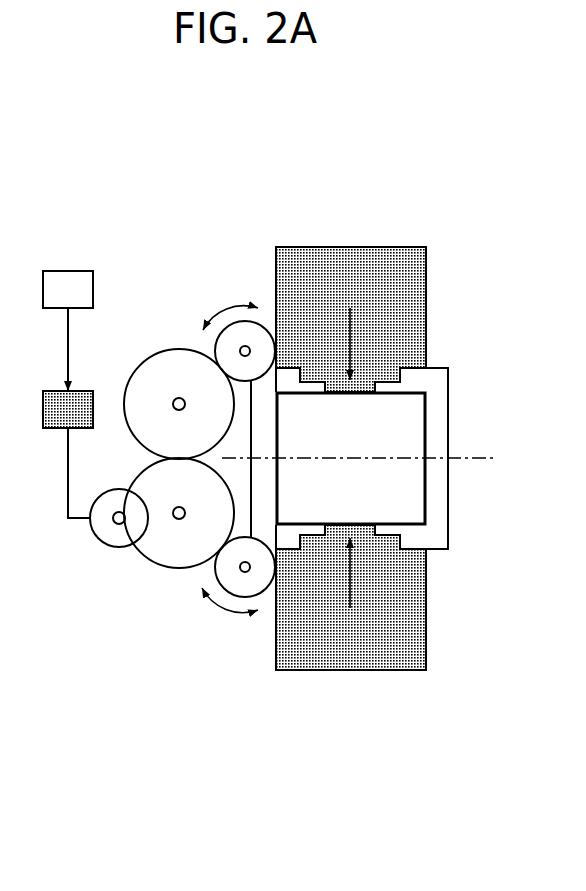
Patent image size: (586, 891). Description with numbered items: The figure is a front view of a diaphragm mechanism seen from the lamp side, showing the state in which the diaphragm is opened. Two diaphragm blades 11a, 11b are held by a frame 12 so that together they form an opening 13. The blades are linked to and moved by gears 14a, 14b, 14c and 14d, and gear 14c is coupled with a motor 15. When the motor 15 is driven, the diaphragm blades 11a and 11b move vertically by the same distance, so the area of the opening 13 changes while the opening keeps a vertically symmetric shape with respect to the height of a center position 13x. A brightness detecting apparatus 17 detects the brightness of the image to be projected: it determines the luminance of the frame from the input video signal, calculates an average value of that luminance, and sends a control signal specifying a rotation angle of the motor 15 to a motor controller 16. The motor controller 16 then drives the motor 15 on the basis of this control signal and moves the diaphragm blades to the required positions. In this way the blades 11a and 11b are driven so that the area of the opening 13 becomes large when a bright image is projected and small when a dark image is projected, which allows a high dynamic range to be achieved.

The diaphragm blade 11a is at (338, 260).
The diaphragm blade 11b is at (337, 647).
The frame 12 is at (437, 380).
The opening 13 is at (425, 528).
The center position 13x is at (478, 457).
The gear 14a is at (239, 333).
The gear 14b is at (165, 380).
The gear 14c is at (178, 548).
The gear 14d is at (240, 583).
The motor 15 is at (118, 548).
The motor controller 16 is at (53, 428).
The brightness detecting apparatus 17 is at (71, 283).